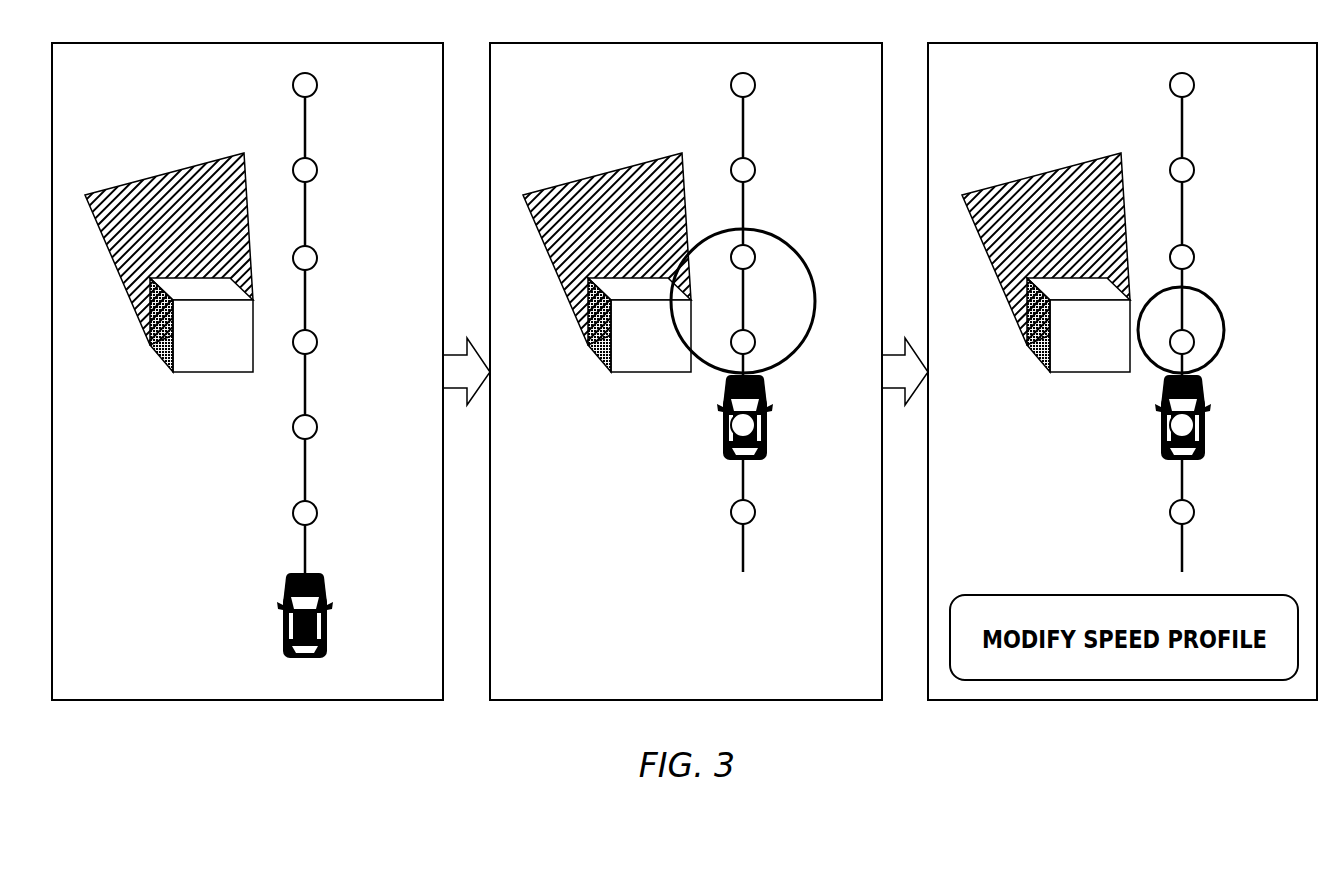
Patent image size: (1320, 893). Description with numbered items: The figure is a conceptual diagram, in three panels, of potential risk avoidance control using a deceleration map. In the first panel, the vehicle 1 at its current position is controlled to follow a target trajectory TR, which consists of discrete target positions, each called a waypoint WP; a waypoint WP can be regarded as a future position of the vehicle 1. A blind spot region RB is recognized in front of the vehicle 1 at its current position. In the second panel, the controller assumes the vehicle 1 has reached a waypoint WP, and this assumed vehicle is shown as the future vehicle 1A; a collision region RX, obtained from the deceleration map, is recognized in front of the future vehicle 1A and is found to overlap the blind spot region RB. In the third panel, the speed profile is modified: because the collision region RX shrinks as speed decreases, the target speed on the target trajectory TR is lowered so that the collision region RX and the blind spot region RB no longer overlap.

The vehicle 1 is at (280, 621).
The future vehicle 1A is at (718, 420).
The waypoint WP is at (317, 342).
The target trajectory TR is at (303, 469).
The blind spot region RB is at (1037, 200).
The collision region RX is at (1213, 293).